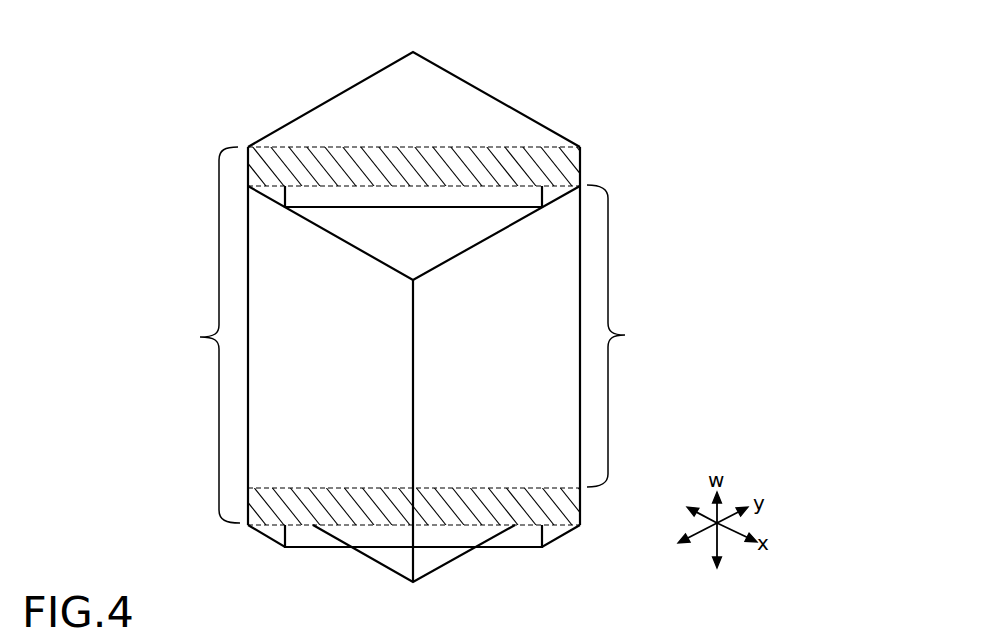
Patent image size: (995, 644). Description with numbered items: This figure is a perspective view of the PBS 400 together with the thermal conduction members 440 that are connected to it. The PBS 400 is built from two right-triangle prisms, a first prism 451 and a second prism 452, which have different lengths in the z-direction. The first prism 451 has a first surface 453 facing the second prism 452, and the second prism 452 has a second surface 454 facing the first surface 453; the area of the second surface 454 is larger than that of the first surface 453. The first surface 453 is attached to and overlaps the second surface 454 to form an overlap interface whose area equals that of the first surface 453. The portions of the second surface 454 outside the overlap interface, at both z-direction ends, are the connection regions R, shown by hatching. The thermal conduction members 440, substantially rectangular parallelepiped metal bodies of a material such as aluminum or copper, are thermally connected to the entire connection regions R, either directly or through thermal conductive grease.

The PBS 400 is at (247, 103).
The second prism 452 is at (473, 102).
The first prism 451 is at (430, 550).
The thermal conduction members 440 is at (315, 197).
The first surface 453 is at (632, 336).
The second surface 454 is at (195, 335).
The connection regions R is at (533, 157).